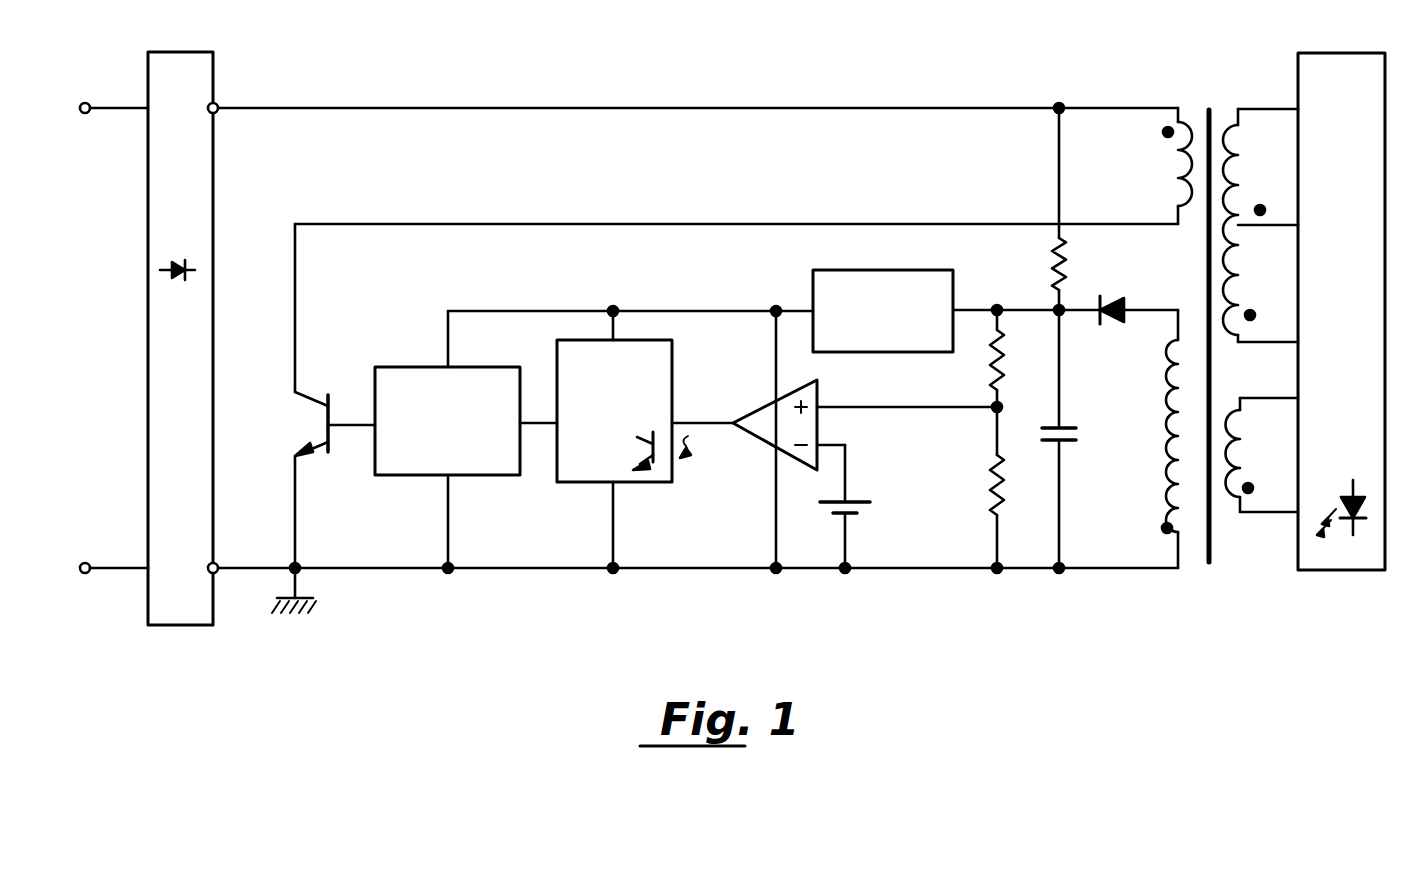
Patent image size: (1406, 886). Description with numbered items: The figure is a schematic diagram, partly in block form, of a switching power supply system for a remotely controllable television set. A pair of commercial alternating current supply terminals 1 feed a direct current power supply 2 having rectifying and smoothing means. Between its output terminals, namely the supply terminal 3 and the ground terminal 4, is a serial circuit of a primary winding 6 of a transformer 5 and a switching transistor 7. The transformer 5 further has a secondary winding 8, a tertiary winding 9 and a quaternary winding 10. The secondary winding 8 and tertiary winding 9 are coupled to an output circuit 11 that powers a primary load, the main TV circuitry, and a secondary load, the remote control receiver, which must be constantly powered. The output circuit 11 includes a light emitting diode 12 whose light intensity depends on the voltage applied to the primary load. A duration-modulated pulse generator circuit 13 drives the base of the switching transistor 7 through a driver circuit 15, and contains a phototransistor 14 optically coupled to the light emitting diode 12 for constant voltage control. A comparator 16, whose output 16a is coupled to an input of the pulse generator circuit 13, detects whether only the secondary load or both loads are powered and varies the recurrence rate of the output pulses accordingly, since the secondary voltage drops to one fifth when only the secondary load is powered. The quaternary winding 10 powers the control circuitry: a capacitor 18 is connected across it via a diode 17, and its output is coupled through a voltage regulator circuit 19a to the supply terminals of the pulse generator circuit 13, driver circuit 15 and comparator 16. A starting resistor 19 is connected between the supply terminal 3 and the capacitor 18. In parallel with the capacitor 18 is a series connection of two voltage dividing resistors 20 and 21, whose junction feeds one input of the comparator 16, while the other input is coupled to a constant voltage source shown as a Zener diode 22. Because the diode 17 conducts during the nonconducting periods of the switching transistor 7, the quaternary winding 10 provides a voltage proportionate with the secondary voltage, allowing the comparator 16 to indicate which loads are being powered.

The alternating current supply terminals 1 is at (85, 103).
The direct current power supply 2 is at (215, 82).
The supply terminal 3 is at (218, 113).
The ground terminal 4 is at (218, 563).
The transformer 5 is at (1208, 98).
The primary winding 6 is at (1166, 172).
The switching transistor 7 is at (308, 405).
The secondary winding 8 is at (1245, 182).
The tertiary winding 9 is at (1245, 455).
The quaternary winding 10 is at (1166, 418).
The output circuit 11 is at (1338, 70).
The light emitting diode 12 is at (1347, 490).
The pulse generator circuit 13 is at (663, 362).
The phototransistor 14 is at (648, 472).
The driver circuit 15 is at (415, 365).
The comparator 16 is at (818, 400).
The comparator output line 16a is at (718, 425).
The diode 17 is at (1109, 302).
The capacitor 18 is at (1075, 445).
The starting resistor 19 is at (1048, 258).
The voltage regulator circuit 19a is at (852, 270).
The voltage dividing resistor 20 is at (988, 355).
The voltage dividing resistor 21 is at (990, 480).
The Zener diode 22 is at (855, 500).